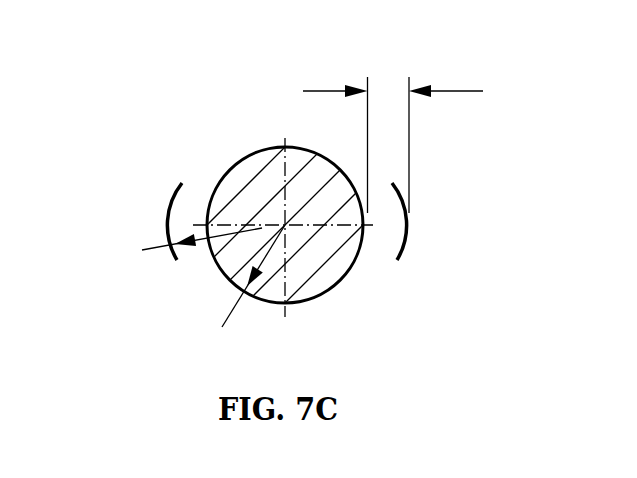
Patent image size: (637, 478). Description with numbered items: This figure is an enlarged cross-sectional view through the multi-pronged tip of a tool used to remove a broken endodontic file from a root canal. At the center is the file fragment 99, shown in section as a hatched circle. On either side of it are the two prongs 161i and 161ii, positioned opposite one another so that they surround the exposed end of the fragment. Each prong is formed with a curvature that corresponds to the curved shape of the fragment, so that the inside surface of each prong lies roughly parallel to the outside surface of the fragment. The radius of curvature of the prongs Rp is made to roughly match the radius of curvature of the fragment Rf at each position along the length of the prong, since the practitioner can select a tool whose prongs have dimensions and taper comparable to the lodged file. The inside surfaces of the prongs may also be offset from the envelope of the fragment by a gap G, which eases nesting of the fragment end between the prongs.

The file fragment 99 is at (257, 142).
The prong 161ii is at (170, 198).
The prong 161i is at (412, 240).
The gap G is at (404, 145).
The radius of curvature of the prongs Rp is at (192, 254).
The radius of curvature of the fragment Rf is at (245, 298).